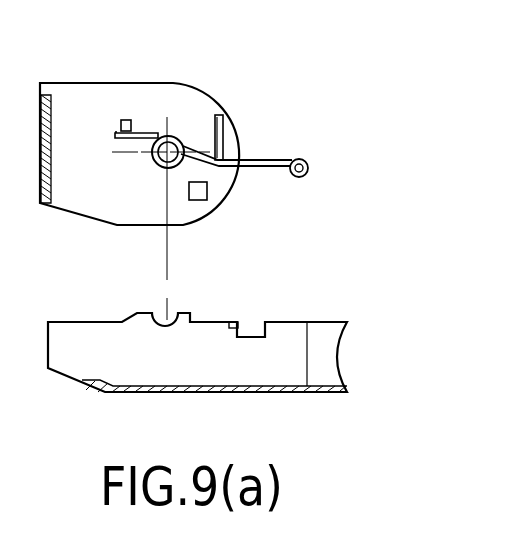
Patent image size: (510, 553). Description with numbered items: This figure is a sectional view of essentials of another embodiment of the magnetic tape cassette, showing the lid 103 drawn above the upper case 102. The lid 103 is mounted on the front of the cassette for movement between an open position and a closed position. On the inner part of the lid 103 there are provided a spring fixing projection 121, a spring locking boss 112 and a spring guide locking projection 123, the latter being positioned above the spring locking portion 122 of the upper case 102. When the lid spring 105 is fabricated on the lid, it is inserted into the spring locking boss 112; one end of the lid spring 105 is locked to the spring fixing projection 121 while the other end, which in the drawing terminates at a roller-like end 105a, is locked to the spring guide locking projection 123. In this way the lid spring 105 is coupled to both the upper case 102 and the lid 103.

The upper case 102 is at (292, 392).
The lid 103 is at (163, 76).
The lid spring 105 is at (266, 168).
The roller 105a is at (308, 160).
The spring locking boss 112 is at (180, 140).
The spring fixing projection 121 is at (121, 120).
The spring locking portion 122 is at (237, 321).
The spring guide locking projection 123 is at (223, 116).